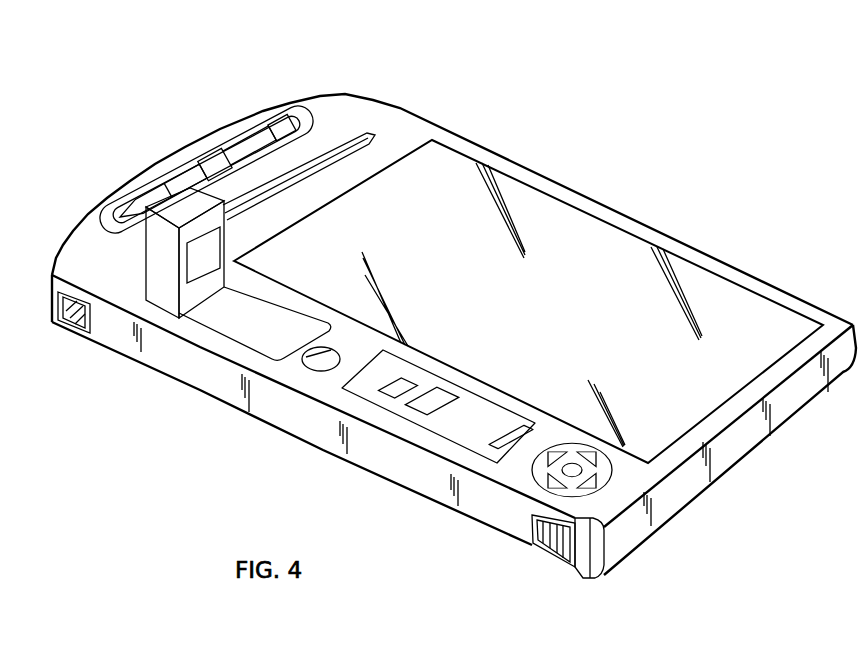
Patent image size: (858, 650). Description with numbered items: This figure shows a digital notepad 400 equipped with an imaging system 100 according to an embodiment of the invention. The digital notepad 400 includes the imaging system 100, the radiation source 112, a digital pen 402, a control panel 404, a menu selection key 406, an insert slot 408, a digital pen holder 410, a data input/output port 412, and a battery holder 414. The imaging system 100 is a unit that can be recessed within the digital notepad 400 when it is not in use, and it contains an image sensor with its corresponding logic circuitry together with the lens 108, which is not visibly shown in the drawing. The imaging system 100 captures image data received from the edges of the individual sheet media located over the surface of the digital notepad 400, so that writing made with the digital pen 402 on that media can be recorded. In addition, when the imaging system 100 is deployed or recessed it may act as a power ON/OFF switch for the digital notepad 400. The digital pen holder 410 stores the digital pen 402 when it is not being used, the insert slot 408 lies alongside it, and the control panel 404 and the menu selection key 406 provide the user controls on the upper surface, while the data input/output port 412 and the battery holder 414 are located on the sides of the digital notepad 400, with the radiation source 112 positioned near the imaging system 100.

The digital notepad 400 is at (660, 113).
The digital pen 402 is at (267, 130).
The control panel 404 is at (410, 424).
The menu selection key 406 is at (604, 478).
The insert slot 408 is at (376, 134).
The digital pen holder 410 is at (288, 128).
The data input/output port 412 is at (66, 317).
The battery holder 414 is at (547, 540).
The imaging system 100 is at (158, 265).
The lens 108 is at (200, 248).
The radiation source 112 is at (322, 357).